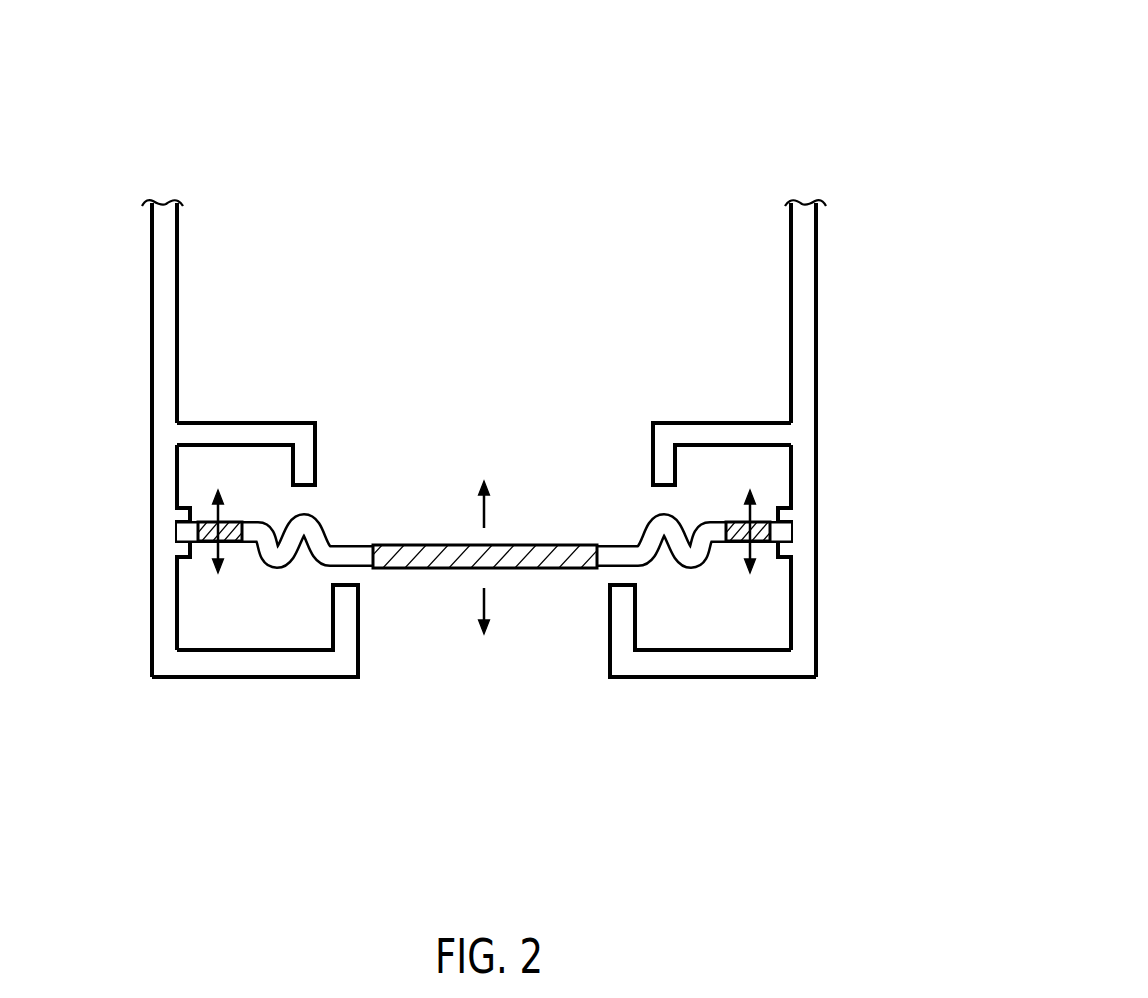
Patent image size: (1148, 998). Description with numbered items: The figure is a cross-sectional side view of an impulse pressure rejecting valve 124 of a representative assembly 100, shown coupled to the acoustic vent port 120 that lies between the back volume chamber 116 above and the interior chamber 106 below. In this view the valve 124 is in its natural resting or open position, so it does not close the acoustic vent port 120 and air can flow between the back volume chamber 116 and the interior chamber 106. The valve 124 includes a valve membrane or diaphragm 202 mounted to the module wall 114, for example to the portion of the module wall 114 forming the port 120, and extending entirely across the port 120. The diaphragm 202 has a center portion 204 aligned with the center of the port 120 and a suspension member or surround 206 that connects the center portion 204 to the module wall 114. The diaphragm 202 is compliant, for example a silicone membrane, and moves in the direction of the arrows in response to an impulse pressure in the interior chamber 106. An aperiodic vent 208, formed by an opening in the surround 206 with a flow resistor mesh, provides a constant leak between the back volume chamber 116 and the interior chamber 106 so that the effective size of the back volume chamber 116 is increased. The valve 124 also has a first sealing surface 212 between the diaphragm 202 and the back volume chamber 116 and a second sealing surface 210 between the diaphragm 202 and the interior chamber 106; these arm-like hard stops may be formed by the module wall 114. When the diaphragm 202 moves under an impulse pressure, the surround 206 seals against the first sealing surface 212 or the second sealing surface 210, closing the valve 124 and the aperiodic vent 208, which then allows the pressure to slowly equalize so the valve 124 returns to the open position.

The enclosure assembly 100 is at (730, 50).
The module wall 114 is at (150, 333).
The valve 124 is at (842, 410).
The back volume chamber 116 is at (503, 278).
The interior chamber 106 is at (503, 804).
The acoustic vent port 120 is at (628, 426).
The first sealing surface 212 is at (248, 423).
The second sealing surface 210 is at (250, 680).
The valve membrane or diaphragm 202 is at (409, 518).
The center portion 204 is at (410, 570).
The suspension member or surround 206 is at (317, 514).
The aperiodic vent 208 is at (228, 543).